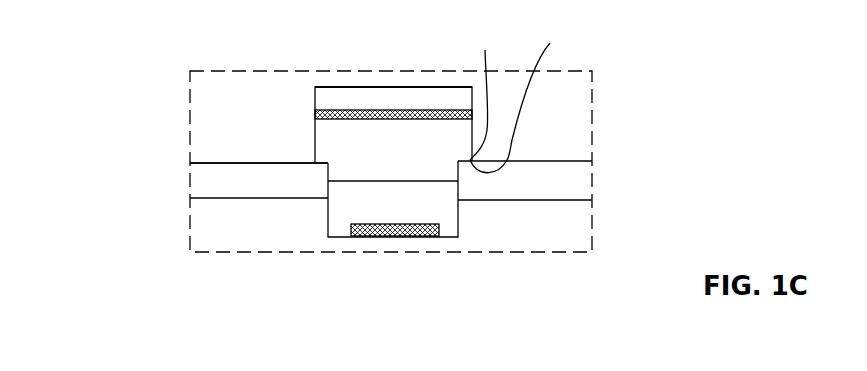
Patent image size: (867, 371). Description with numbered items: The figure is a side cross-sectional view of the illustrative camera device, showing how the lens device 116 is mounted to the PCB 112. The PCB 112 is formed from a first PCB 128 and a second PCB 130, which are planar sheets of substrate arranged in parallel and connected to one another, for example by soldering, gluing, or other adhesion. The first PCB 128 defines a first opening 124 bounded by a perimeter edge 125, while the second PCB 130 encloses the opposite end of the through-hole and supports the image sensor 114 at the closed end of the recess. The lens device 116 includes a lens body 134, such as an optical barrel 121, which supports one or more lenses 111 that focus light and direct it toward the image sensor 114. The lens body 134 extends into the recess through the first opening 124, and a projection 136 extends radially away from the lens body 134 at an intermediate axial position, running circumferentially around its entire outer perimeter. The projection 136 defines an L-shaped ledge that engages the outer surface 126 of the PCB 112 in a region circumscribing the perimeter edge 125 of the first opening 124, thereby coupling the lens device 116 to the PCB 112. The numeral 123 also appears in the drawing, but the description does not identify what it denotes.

The lens 111 is at (433, 113).
The PCB 112 is at (604, 200).
The image sensor 114 is at (419, 230).
The lens device 116 is at (322, 84).
The optical barrel 121 is at (368, 102).
The component assembly 123 is at (393, 43).
The first opening 124 is at (327, 173).
The perimeter edge 125 is at (542, 101).
The outer surface 126 is at (229, 160).
The first PCB 128 is at (199, 178).
The second PCB 130 is at (194, 229).
The lens body 134 is at (347, 179).
The projection 136 is at (500, 88).